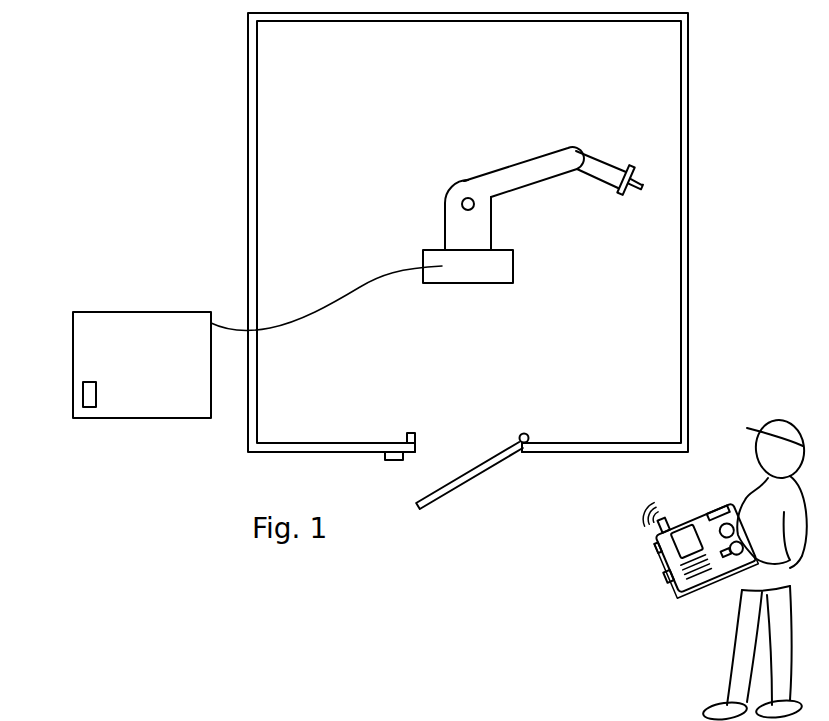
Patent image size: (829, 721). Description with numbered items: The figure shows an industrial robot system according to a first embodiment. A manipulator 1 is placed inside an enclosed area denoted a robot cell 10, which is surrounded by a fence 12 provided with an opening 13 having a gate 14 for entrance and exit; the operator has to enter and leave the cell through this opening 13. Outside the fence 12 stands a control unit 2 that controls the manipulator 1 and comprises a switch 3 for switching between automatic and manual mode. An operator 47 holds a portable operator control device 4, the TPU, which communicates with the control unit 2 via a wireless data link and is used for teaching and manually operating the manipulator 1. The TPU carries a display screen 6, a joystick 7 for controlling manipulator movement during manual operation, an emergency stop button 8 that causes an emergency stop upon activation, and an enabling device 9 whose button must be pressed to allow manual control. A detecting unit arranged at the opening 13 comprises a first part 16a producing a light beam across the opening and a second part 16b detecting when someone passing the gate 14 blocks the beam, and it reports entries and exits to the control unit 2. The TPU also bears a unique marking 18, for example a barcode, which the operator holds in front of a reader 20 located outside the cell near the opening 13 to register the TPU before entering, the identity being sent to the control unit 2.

The manipulator 1 is at (453, 225).
The control unit 2 is at (102, 330).
The switch 3 is at (88, 393).
The portable operator control device 4 is at (677, 538).
The display screen 6 is at (687, 537).
The joystick 7 is at (737, 555).
The emergency stop button 8 is at (730, 523).
The enabling device 9 is at (670, 582).
The robot cell 10 is at (590, 304).
The fence 12 is at (690, 192).
The opening 13 is at (470, 440).
The gate 14 is at (476, 474).
The first part of detecting unit 16a is at (415, 433).
The second part of detecting unit 16b is at (525, 434).
The unique marking 18 is at (723, 503).
The reader 20 is at (382, 459).
The operator 47 is at (485, 720).